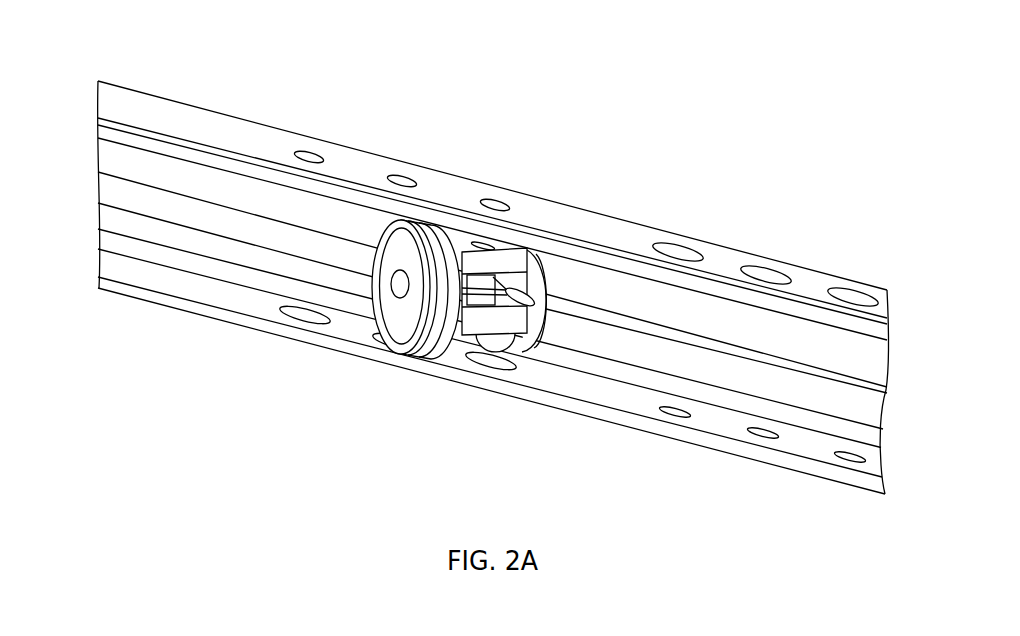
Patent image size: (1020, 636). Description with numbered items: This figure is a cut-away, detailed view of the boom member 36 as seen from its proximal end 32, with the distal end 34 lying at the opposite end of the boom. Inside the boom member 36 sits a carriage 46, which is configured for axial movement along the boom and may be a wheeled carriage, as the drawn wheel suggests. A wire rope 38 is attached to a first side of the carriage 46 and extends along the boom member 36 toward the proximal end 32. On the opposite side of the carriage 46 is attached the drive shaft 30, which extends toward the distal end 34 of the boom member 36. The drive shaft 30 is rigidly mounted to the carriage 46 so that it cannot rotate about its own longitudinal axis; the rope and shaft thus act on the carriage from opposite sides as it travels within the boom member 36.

The drive shaft 30 is at (218, 217).
The proximal end 32 is at (900, 439).
The distal end 34 is at (80, 97).
The boom member 36 is at (542, 208).
The wire rope 38 is at (707, 347).
The carriage 46 is at (473, 322).